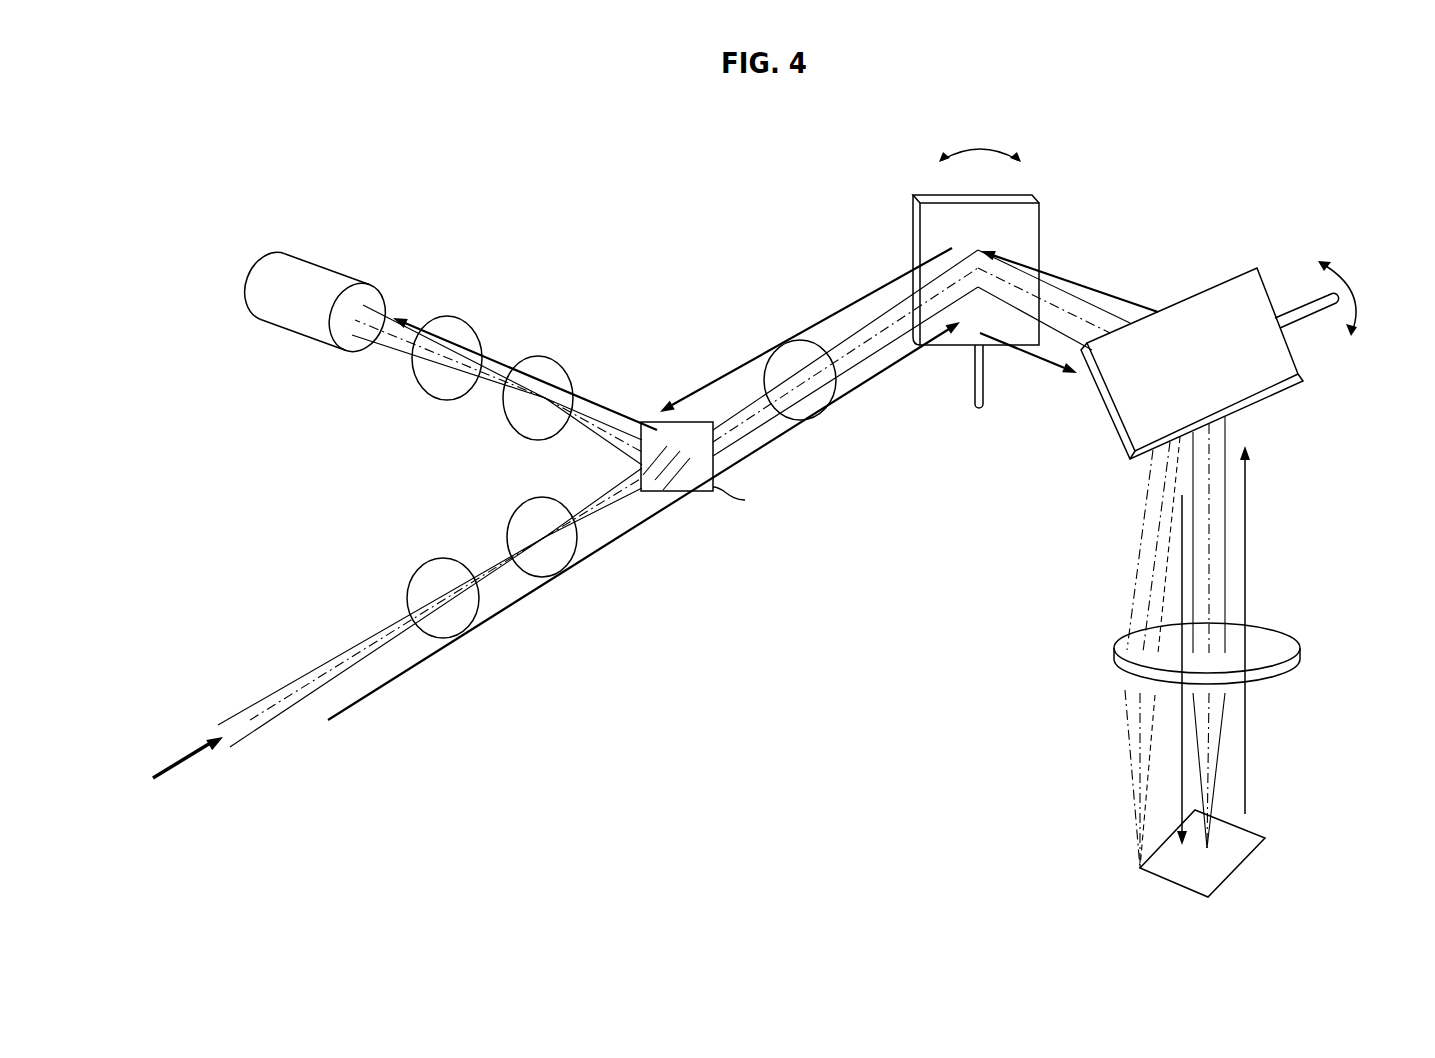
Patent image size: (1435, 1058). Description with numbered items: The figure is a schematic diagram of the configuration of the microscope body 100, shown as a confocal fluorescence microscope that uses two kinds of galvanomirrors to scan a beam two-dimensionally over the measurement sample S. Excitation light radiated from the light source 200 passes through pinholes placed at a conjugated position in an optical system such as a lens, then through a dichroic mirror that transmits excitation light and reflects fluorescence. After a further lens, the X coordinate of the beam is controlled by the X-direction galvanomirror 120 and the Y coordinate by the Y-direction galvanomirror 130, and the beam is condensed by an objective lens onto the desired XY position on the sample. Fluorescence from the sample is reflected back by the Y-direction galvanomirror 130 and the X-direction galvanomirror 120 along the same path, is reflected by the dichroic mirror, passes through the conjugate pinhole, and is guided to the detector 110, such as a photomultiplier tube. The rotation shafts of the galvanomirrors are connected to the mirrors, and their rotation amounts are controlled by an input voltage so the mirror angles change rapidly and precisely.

The microscope body 100 is at (765, 492).
The detector 110 is at (328, 268).
The X-direction galvanomirror 120 is at (1040, 217).
The Y-direction galvanomirror 130 is at (1305, 372).
The light source 200 is at (195, 789).